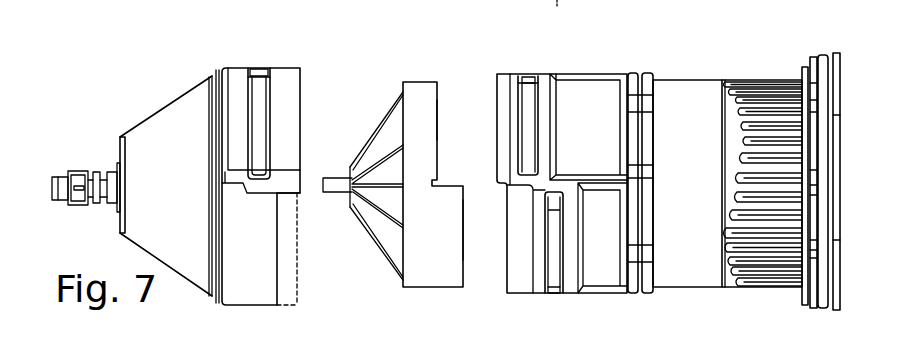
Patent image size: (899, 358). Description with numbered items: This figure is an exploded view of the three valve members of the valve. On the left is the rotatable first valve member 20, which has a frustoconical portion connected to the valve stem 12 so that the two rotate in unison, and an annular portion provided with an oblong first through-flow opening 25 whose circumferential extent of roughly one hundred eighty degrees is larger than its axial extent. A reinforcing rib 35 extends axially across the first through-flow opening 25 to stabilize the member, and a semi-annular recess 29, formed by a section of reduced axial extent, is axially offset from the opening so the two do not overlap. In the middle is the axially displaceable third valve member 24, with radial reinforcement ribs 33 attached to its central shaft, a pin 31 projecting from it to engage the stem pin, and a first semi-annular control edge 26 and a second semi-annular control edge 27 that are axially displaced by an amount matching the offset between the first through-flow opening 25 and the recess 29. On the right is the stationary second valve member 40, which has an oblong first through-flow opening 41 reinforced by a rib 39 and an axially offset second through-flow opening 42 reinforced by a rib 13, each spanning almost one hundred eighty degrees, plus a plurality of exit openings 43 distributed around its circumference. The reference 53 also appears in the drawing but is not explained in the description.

The valve stem 12 is at (57, 176).
The reinforcing rib 13 is at (560, 288).
The first valve member 20 is at (203, 110).
The third valve member 24 is at (427, 88).
The first through-flow opening 25 is at (259, 112).
The first semi-annular control edge 26 is at (439, 121).
The second semi-annular control edge 27 is at (465, 231).
The semi-annular recess 29 is at (285, 234).
The pin 31 is at (342, 185).
The radial reinforcement ribs 33 is at (382, 170).
The reinforcing rib 35 is at (259, 68).
The reinforcing rib 39 is at (527, 72).
The second valve member 40 is at (680, 82).
The first through-flow opening 41 is at (530, 107).
The second through-flow opening 42 is at (555, 238).
The exit openings 43 is at (762, 80).
The section line 53 is at (606, 2).